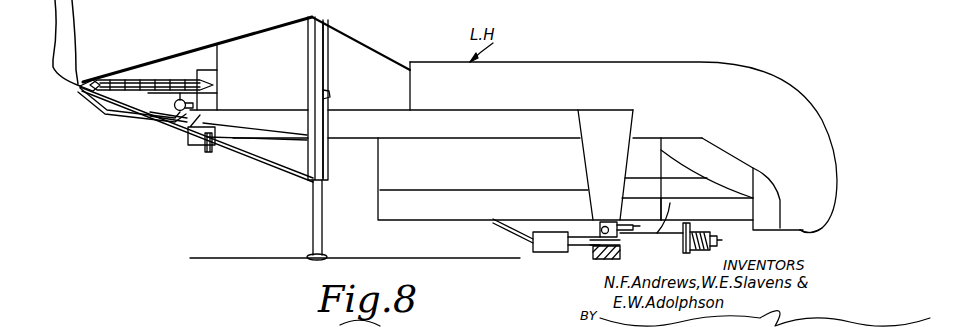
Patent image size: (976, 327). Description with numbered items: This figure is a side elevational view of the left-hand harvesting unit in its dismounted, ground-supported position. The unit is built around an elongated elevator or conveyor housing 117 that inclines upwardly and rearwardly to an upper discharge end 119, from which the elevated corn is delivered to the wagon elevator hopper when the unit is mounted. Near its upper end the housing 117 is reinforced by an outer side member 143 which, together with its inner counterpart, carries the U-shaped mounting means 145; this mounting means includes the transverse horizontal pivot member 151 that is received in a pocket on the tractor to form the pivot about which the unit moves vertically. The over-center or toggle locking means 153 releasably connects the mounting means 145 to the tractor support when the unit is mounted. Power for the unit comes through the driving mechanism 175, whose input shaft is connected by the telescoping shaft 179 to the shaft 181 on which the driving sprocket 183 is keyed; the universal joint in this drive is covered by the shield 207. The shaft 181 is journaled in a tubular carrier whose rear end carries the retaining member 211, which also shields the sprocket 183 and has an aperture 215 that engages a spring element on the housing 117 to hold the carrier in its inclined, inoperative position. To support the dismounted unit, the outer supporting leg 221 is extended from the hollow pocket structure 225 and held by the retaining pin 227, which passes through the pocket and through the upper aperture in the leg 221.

The elevator or conveyor housing 117 is at (580, 64).
The upper discharge end 119 is at (813, 233).
The outer side member 143 is at (588, 163).
The U-shaped mounting means 145 is at (598, 226).
The transverse horizontal pivot member 151 is at (602, 238).
The over-center or toggle locking means 153 is at (657, 235).
The driving mechanism 175 is at (677, 215).
The telescoping shaft 179 is at (510, 232).
The shaft 181 is at (710, 240).
The driving sprocket 183 is at (713, 252).
The shield 207 is at (543, 246).
The retaining member 211 is at (707, 222).
The aperture 215 is at (710, 197).
The outer supporting leg 221 is at (312, 214).
The pocket structure 225 is at (327, 68).
The retaining pin 227 is at (329, 95).